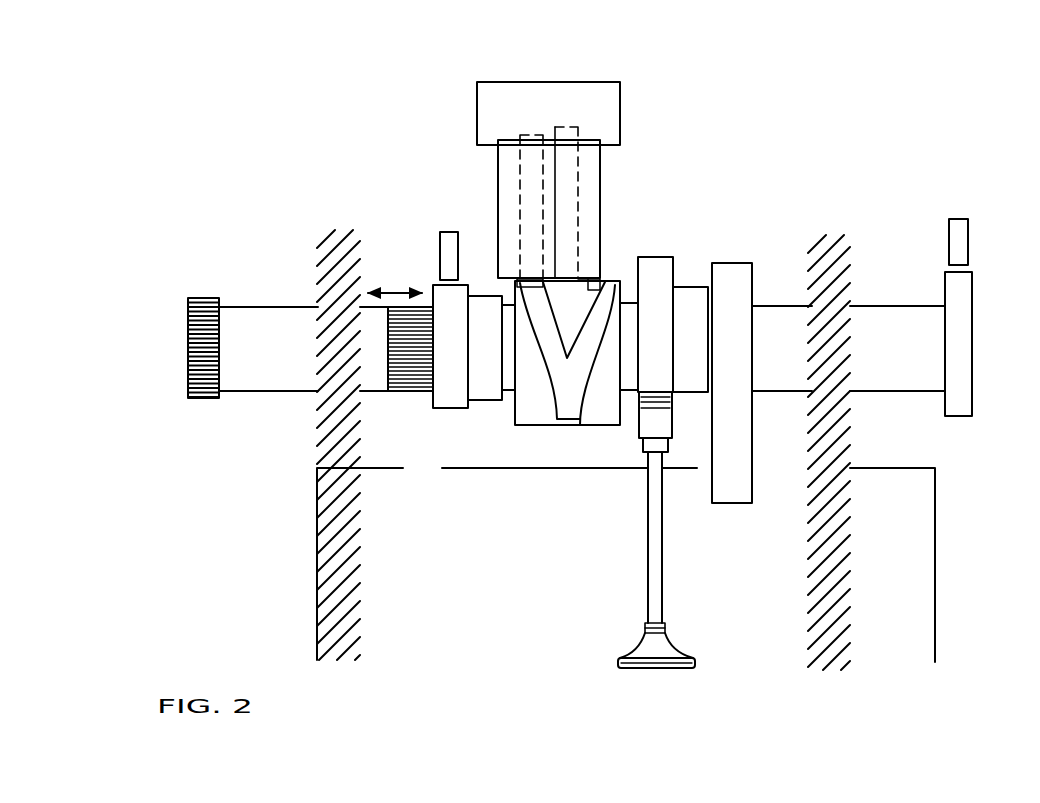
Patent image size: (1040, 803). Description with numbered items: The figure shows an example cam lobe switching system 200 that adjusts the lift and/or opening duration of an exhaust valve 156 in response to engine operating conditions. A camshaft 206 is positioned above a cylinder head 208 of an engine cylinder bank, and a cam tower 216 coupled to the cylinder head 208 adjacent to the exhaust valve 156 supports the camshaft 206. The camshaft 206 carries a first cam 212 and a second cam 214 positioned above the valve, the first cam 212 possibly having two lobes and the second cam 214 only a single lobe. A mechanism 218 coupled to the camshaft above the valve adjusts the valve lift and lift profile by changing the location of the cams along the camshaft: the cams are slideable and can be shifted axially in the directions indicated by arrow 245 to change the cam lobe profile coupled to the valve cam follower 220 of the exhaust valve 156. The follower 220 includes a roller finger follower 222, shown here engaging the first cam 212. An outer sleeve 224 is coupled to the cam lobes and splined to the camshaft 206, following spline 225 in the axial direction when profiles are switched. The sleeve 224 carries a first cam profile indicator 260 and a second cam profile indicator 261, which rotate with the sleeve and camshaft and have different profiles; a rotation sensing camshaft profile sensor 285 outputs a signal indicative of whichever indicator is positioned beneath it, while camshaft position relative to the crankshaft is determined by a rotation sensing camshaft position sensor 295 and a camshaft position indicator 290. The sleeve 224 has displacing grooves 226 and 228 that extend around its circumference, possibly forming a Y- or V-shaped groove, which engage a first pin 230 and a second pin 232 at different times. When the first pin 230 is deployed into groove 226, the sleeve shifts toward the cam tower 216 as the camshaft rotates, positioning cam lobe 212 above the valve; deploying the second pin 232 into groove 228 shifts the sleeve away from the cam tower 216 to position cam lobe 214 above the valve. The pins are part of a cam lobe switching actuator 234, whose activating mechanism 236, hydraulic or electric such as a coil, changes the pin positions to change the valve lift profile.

The exhaust valve 156 is at (648, 497).
The cam lobe switching system 200 is at (705, 150).
The camshaft 206 is at (267, 306).
The cylinder head 208 is at (925, 467).
The first cam 212 is at (657, 270).
The second cam 214 is at (678, 290).
The cam tower 216 is at (732, 283).
The mechanism 218 is at (490, 271).
The valve cam follower 220 is at (610, 437).
The roller finger follower 222 is at (657, 415).
The outer sleeve 224 is at (545, 367).
The spline 225 is at (427, 397).
The groove 226 is at (534, 410).
The groove 228 is at (593, 313).
The first pin 230 is at (527, 183).
The second pin 232 is at (565, 178).
The cam lobe switching actuator 234 is at (509, 150).
The activating mechanism 236 is at (537, 98).
The arrow 245 is at (410, 293).
The first cam profile indicator 260 is at (450, 408).
The second cam profile indicator 261 is at (492, 408).
The rotation sensing camshaft profile sensor 285 is at (452, 232).
The camshaft position indicator 290 is at (973, 335).
The rotation sensing camshaft position sensor 295 is at (958, 217).